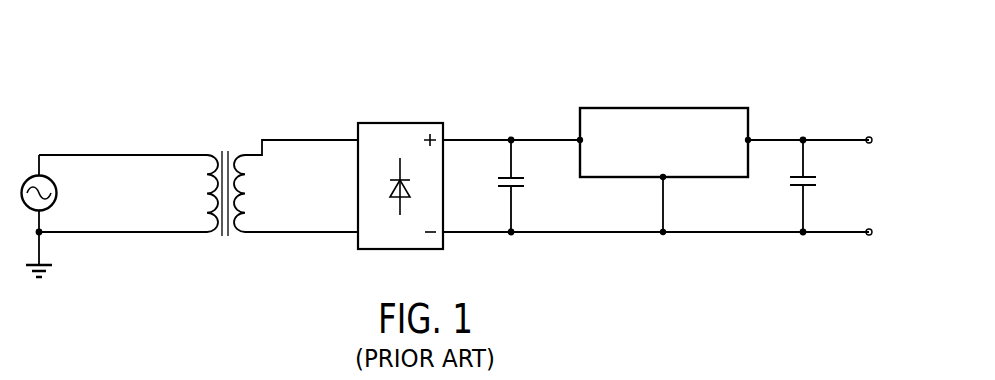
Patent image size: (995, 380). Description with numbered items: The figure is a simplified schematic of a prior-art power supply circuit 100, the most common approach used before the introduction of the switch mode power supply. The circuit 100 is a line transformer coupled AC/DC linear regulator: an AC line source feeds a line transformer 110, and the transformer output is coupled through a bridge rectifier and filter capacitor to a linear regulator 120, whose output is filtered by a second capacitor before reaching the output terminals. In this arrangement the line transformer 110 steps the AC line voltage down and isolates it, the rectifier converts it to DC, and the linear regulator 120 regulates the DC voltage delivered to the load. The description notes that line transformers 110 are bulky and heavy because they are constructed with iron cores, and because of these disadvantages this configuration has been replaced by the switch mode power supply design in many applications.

The circuit 100 is at (447, 143).
The line transformer 110 is at (236, 233).
The AC/DC linear regulator 120 is at (688, 108).